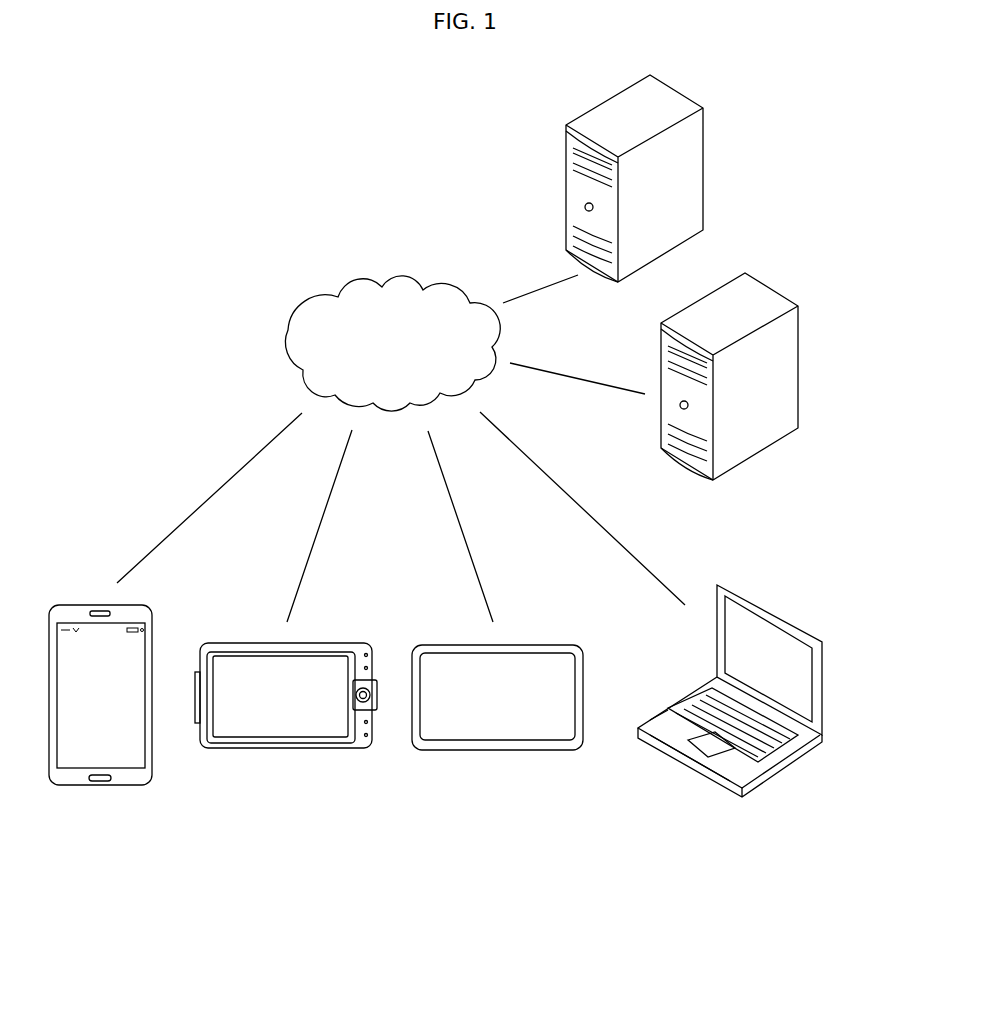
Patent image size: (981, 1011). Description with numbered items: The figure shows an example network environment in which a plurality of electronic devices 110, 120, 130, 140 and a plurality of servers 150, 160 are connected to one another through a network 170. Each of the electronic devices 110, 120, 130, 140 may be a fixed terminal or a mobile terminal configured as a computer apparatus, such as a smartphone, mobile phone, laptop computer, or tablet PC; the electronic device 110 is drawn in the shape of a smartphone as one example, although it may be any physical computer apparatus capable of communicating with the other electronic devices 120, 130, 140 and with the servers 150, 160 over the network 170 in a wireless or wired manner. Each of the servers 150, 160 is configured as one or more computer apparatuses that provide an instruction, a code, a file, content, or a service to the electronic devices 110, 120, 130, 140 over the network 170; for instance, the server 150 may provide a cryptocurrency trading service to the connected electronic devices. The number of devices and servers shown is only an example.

The electronic device 110 is at (100, 787).
The electronic device 120 is at (285, 748).
The electronic device 130 is at (497, 750).
The electronic device 140 is at (822, 690).
The server 150 is at (798, 365).
The server 160 is at (703, 165).
The network 170 is at (397, 272).